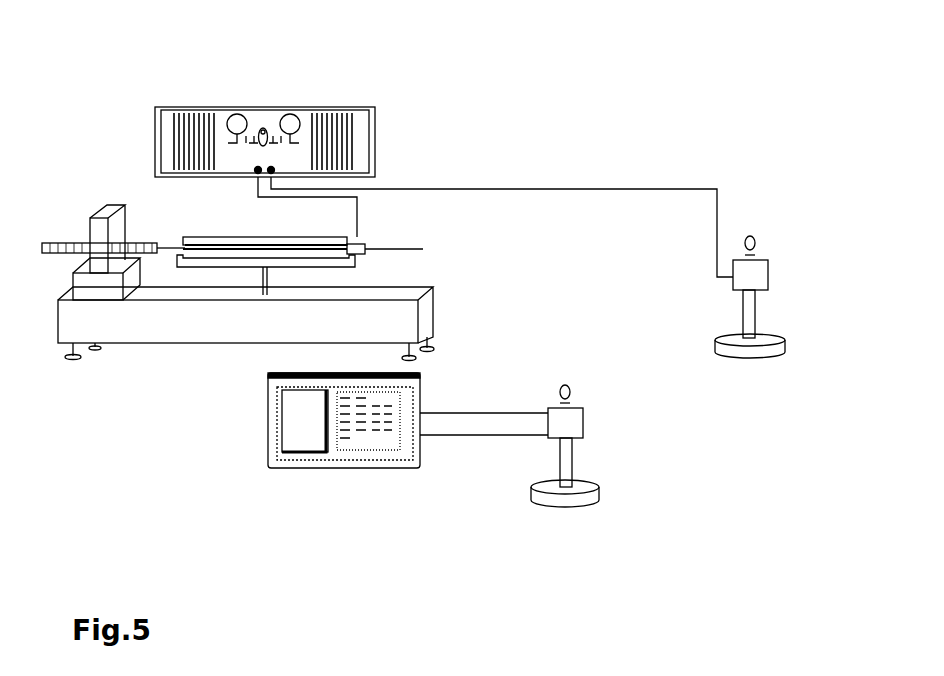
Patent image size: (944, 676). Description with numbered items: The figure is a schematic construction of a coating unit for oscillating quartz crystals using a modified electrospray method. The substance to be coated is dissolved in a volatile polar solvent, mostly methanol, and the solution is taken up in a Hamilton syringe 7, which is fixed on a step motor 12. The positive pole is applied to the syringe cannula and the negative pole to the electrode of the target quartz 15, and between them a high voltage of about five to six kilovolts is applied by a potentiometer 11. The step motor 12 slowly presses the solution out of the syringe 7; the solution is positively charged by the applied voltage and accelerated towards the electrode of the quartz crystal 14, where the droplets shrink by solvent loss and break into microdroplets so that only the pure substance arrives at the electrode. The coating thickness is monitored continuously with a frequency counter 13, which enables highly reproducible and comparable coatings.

The Hamilton syringe 7 is at (222, 232).
The potentiometer 11 is at (262, 112).
The step motor 12 is at (257, 340).
The frequency counter 13 is at (338, 470).
The quartz crystal 14 is at (615, 503).
The target quartz 15 is at (743, 367).